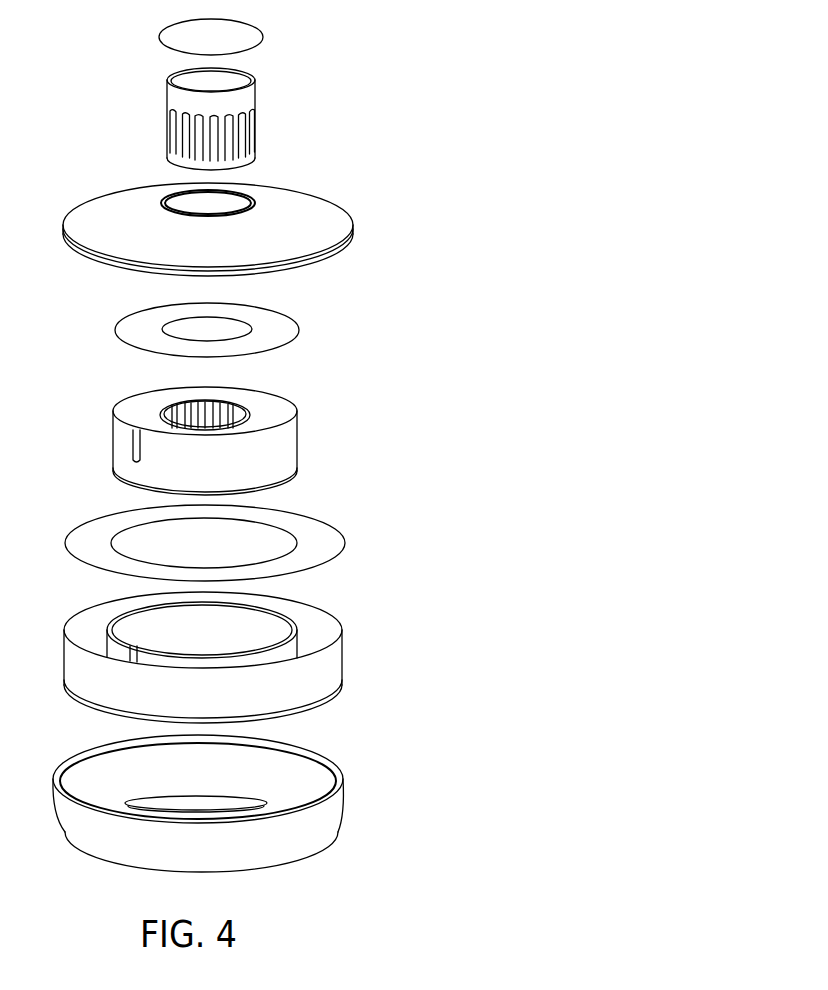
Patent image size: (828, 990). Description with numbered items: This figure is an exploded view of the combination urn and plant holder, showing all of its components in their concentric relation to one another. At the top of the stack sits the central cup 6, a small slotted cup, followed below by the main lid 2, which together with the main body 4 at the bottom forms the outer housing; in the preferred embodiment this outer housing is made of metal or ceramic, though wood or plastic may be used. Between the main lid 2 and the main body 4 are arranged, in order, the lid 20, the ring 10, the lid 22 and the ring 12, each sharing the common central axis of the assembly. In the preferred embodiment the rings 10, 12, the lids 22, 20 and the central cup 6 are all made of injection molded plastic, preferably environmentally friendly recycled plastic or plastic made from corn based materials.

The central cup 6 is at (228, 103).
The main lid 2 is at (293, 212).
The lid 20 is at (263, 327).
The ring 10 is at (272, 445).
The lid 22 is at (312, 540).
The ring 12 is at (302, 678).
The main body 4 is at (292, 837).